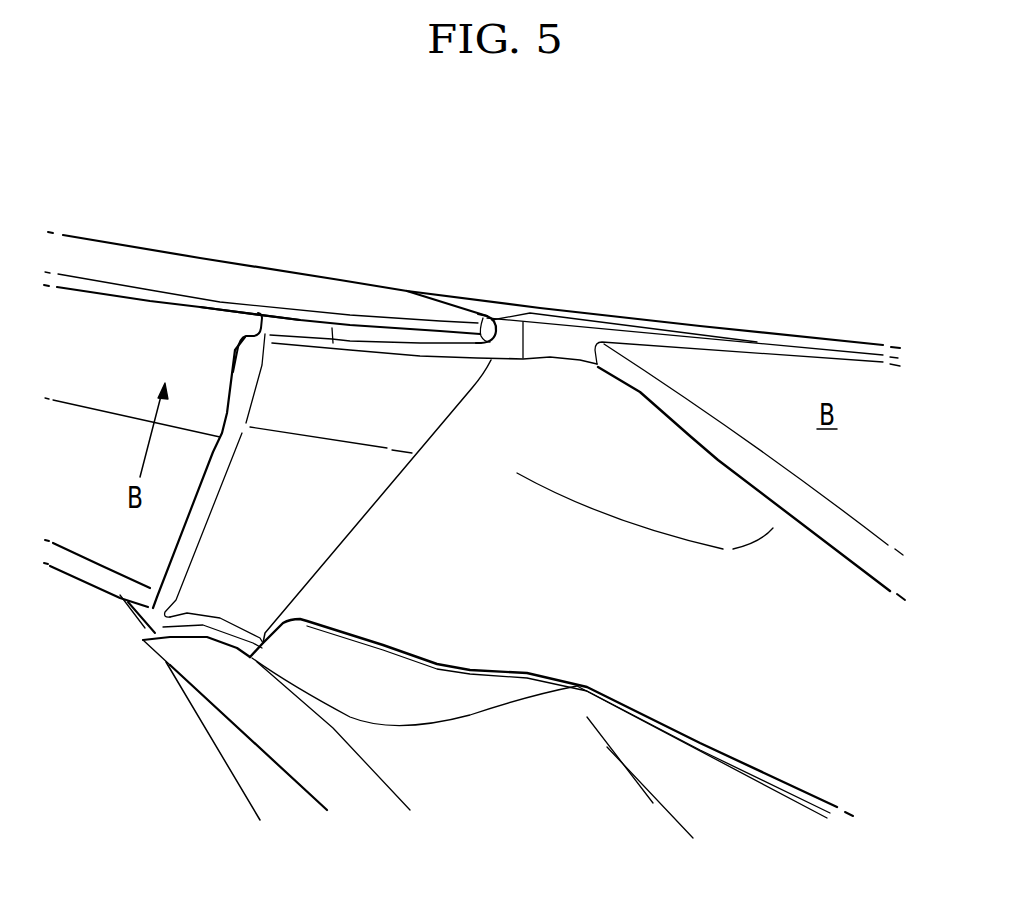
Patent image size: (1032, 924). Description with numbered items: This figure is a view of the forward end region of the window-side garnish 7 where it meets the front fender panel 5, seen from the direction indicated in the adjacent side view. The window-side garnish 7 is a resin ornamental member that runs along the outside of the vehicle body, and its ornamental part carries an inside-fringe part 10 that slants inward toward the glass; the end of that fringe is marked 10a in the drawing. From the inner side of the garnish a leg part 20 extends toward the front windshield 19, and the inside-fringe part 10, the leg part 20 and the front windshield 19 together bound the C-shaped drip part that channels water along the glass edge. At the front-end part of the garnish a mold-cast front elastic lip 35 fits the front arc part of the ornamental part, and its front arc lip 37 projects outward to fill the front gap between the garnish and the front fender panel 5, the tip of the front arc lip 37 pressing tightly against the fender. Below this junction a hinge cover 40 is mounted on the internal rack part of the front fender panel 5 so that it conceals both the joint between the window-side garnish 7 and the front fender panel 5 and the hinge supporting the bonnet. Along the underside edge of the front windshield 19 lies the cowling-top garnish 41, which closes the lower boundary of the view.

The window-side garnish 7 is at (90, 255).
The inside-fringe part 10 is at (153, 268).
The end portion of roof molding 10a is at (257, 312).
The front arc lip 37 is at (451, 249).
The front elastic lip 35 is at (484, 326).
The front fender panel 5 is at (543, 312).
The leg part 20 is at (80, 358).
The front windshield 19 is at (77, 673).
The hinge cover 40 is at (640, 620).
The cowling-top garnish 41 is at (493, 790).